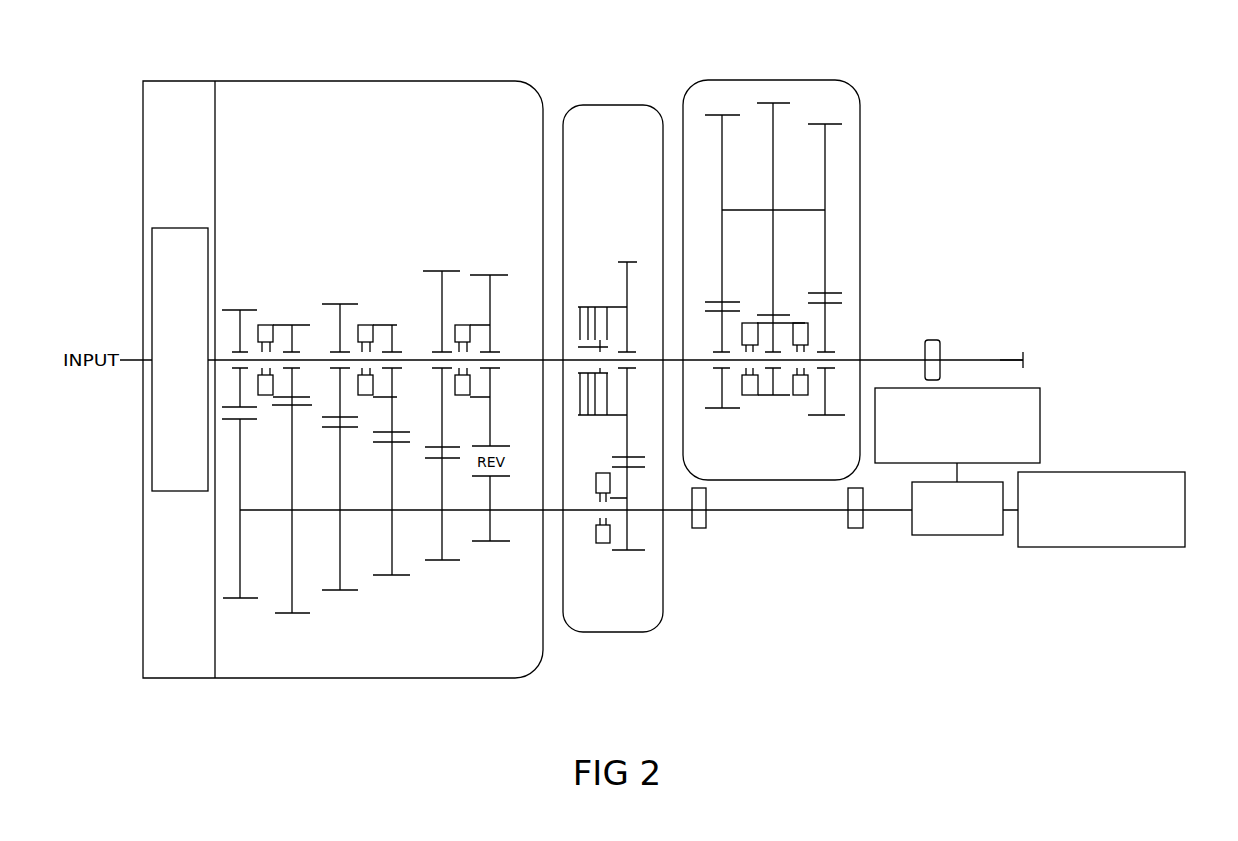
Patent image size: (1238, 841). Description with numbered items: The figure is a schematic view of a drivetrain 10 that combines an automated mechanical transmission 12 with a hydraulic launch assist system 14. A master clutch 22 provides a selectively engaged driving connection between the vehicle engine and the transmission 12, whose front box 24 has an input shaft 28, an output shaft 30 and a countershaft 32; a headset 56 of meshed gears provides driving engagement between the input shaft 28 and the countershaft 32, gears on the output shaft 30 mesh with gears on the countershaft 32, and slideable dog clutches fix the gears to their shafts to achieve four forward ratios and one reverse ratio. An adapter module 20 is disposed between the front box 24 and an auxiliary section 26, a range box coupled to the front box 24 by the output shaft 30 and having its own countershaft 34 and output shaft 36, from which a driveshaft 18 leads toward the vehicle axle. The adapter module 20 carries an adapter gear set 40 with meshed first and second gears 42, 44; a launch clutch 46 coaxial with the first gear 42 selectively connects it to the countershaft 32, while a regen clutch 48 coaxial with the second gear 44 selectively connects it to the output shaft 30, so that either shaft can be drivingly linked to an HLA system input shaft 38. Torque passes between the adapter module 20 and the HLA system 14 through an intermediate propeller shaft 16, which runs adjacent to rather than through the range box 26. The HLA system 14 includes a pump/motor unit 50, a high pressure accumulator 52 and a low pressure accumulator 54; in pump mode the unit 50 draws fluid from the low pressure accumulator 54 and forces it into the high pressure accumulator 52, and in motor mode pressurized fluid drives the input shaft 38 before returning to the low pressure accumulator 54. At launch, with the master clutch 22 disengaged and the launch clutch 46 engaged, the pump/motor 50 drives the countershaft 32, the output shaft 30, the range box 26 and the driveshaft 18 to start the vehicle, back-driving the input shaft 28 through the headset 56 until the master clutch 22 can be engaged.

The drivetrain 10 is at (878, 75).
The automated mechanical transmission 12 is at (575, 75).
The hydraulic launch assist system 14 is at (937, 600).
The intermediate propeller shaft 16 is at (777, 510).
The driveshaft 18 is at (973, 360).
The adapter module 20 is at (613, 632).
The master clutch 22 is at (180, 359).
The front box 24 is at (228, 81).
The auxiliary section 26 is at (767, 78).
The input shaft 28 is at (226, 352).
The output shaft 30 is at (422, 357).
The countershaft 32 is at (455, 510).
The countershaft 34 is at (798, 210).
The output shaft 36 is at (887, 360).
The HLA system input shaft 38 is at (875, 510).
The adapter gear set 40 is at (613, 200).
The first gear 42 is at (620, 552).
The second gear 44 is at (631, 262).
The launch clutch 46 is at (600, 543).
The regen clutch 48 is at (585, 415).
The pump/motor unit 50 is at (932, 535).
The high pressure accumulator 52 is at (1040, 425).
The low pressure accumulator 54 is at (1098, 547).
The headset 56 is at (250, 292).